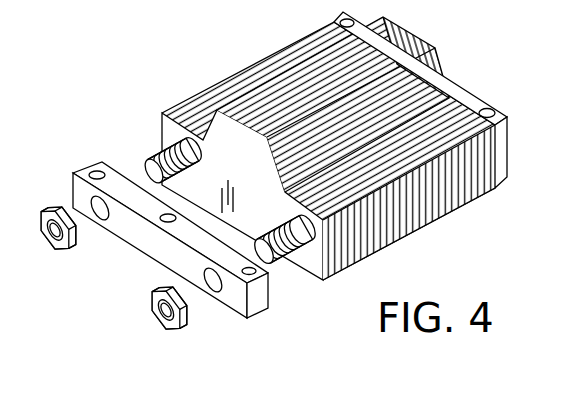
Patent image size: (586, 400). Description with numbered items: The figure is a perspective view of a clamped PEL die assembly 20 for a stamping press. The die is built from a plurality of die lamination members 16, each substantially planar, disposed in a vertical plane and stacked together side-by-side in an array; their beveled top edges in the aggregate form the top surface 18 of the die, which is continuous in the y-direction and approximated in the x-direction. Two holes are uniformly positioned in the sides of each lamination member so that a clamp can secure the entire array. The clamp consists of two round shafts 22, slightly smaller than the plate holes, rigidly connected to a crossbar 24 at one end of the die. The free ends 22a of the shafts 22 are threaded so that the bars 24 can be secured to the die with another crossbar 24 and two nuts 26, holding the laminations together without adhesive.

The die lamination members 16 is at (483, 188).
The top surface 18 is at (288, 54).
The clamped PEL die assembly 20 is at (508, 143).
The round shafts 22 is at (189, 160).
The free ends 22a is at (268, 264).
The crossbar 24 is at (468, 93).
The nuts 26 is at (54, 250).